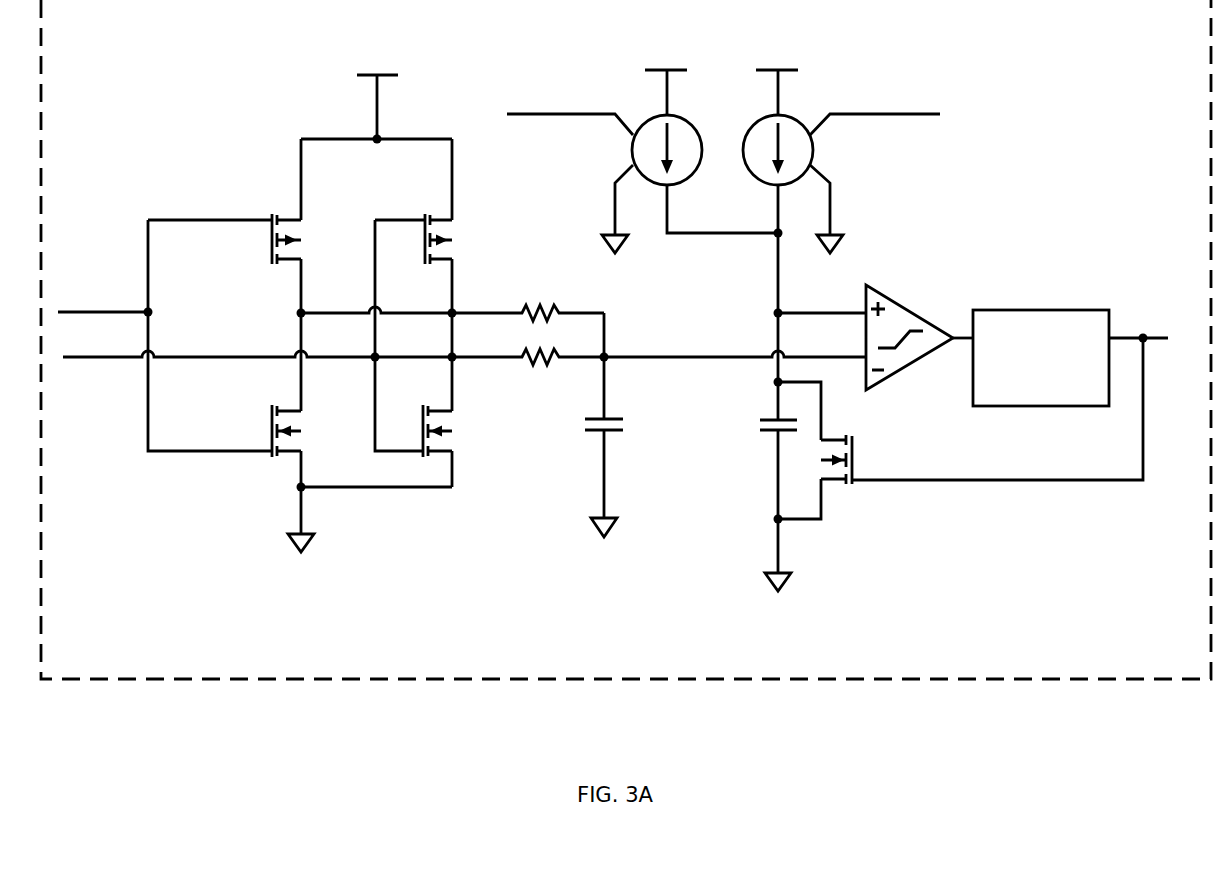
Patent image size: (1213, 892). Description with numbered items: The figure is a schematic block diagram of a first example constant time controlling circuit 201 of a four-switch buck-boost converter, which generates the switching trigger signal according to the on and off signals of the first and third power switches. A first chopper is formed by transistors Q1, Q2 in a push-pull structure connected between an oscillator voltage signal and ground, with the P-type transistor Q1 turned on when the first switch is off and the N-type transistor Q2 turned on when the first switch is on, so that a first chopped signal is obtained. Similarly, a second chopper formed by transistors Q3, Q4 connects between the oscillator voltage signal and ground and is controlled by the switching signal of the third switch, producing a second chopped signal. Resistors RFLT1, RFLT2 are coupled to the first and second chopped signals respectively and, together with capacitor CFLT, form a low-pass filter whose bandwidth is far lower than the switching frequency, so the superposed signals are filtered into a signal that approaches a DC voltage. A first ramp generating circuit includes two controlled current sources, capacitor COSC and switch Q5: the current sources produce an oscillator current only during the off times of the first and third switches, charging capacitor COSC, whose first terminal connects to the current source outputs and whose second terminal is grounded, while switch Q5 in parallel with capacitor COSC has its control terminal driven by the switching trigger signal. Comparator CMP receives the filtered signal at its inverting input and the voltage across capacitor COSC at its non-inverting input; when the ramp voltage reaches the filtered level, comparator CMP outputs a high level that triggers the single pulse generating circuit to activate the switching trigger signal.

The constant time controlling circuit 201 is at (626, 339).
The transistor Q1 is at (268, 239).
The transistor Q2 is at (268, 431).
The transistor Q3 is at (422, 239).
The transistor Q4 is at (422, 431).
The switch Q5 is at (853, 459).
The resistor RFLT1 is at (541, 298).
The resistor RFLT2 is at (537, 376).
The capacitor CFLT is at (624, 415).
The capacitor COSC is at (756, 427).
The comparator CMP is at (909, 334).